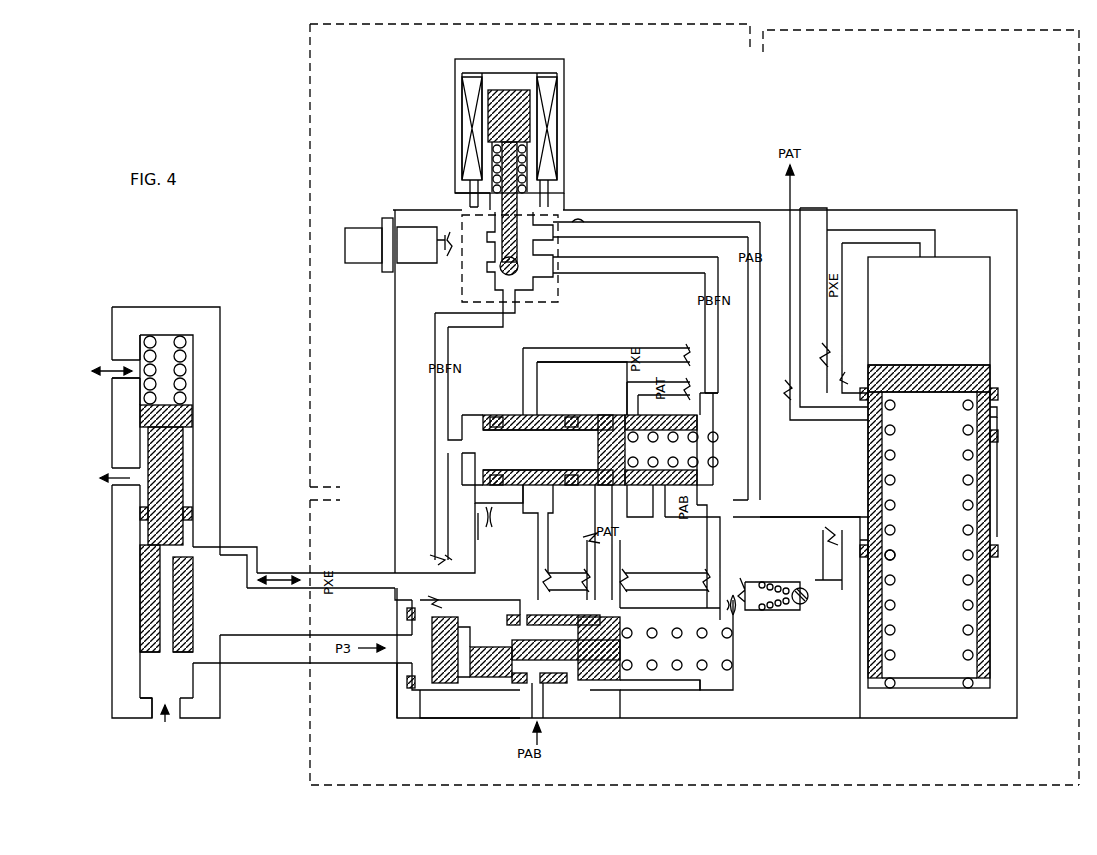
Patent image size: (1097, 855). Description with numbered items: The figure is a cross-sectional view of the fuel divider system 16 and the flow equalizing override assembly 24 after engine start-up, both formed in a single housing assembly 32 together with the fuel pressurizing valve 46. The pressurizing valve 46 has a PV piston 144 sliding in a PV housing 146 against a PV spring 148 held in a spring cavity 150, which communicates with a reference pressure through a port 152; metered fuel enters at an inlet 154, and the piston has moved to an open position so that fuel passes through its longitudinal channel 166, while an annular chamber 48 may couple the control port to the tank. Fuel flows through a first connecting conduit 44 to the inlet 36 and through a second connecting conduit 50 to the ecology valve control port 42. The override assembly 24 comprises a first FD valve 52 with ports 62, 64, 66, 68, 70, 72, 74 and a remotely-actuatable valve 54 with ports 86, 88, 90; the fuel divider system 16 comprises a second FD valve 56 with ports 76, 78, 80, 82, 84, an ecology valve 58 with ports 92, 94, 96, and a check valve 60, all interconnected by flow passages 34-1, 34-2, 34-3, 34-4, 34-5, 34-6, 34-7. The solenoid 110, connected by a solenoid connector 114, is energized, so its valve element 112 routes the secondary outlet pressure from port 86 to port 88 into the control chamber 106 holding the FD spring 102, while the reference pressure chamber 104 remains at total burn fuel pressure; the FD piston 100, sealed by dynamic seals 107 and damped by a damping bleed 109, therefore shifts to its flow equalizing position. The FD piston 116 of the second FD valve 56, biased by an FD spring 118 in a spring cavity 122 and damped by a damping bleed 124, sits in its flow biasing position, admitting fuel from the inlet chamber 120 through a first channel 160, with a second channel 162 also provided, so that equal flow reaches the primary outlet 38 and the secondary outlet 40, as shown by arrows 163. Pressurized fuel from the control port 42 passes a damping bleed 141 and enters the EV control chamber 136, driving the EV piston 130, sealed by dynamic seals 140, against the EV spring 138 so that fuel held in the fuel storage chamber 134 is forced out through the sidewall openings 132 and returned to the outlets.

The fuel divider system 16 is at (1079, 200).
The override assembly 24 is at (310, 112).
The housing assembly 32 is at (822, 686).
The inlet 36 is at (398, 663).
The primary outlet 38 is at (790, 208).
The secondary outlet 40 is at (540, 725).
The ecology valve control port 42 is at (392, 573).
The first connecting conduit 44 is at (266, 664).
The fuel pressurizing valve 46 is at (118, 738).
The annular chamber 48 is at (196, 490).
The second connecting conduit 50 is at (295, 573).
The first fuel divider valve 52 is at (550, 392).
The remotely-actuatable valve 54 is at (572, 188).
The second fuel divider valve 56 is at (466, 708).
The ecology valve 58 is at (1010, 305).
The check valve 60 is at (800, 595).
The first port 62 is at (452, 458).
The second port 64 is at (523, 400).
The third port 66 is at (548, 488).
The fourth port 68 is at (595, 490).
The fifth port 70 is at (628, 410).
The sixth port 72 is at (660, 488).
The seventh port 74 is at (714, 410).
The first port 76 is at (410, 640).
The second port 78 is at (410, 608).
The third port 80 is at (548, 598).
The fourth port 82 is at (612, 718).
The fifth port 84 is at (740, 640).
The first port 86 is at (576, 232).
The second port 88 is at (566, 276).
The third port 90 is at (518, 308).
The first port 92 is at (936, 246).
The second port 94 is at (1000, 412).
The third port 96 is at (1000, 490).
The FD piston 100 is at (598, 440).
The FD spring 102 is at (716, 468).
The reference pressure chamber 104 is at (510, 461).
The control chamber 106 is at (718, 432).
The dynamic seals 107 is at (494, 416).
The damping bleed 109 is at (586, 222).
The solenoid 110 is at (465, 130).
The valve element 112 is at (498, 262).
The solenoid connector 114 is at (360, 232).
The FD piston 116 is at (570, 683).
The FD spring 118 is at (700, 660).
The inlet chamber 120 is at (450, 725).
The spring cavity 122 is at (680, 685).
The damping bleed 124 is at (734, 605).
The EV piston 130 is at (882, 655).
The sidewall openings 132 is at (885, 520).
The fuel storage chamber 134 is at (945, 606).
The EV control chamber 136 is at (948, 326).
The EV spring 138 is at (895, 552).
The dynamic seals 140 is at (1000, 388).
The damping bleed 141 is at (492, 533).
The PV piston 144 is at (142, 525).
The PV housing 146 is at (212, 350).
The PV spring 148 is at (182, 330).
The spring cavity 150 is at (142, 345).
The port 152 is at (118, 378).
The inlet 154 is at (180, 722).
The first channel 160 is at (432, 602).
The second channel 162 is at (508, 685).
The arrows 163 is at (530, 730).
The longitudinal channel 166 is at (140, 645).
The flow passage 34-1 is at (432, 422).
The flow passage 34-2 is at (598, 350).
The flow passage 34-3 is at (684, 573).
The flow passage 34-4 is at (622, 588).
The flow passage 34-5 is at (812, 230).
The flow passage 34-6 is at (660, 222).
The flow passage 34-7 is at (640, 273).